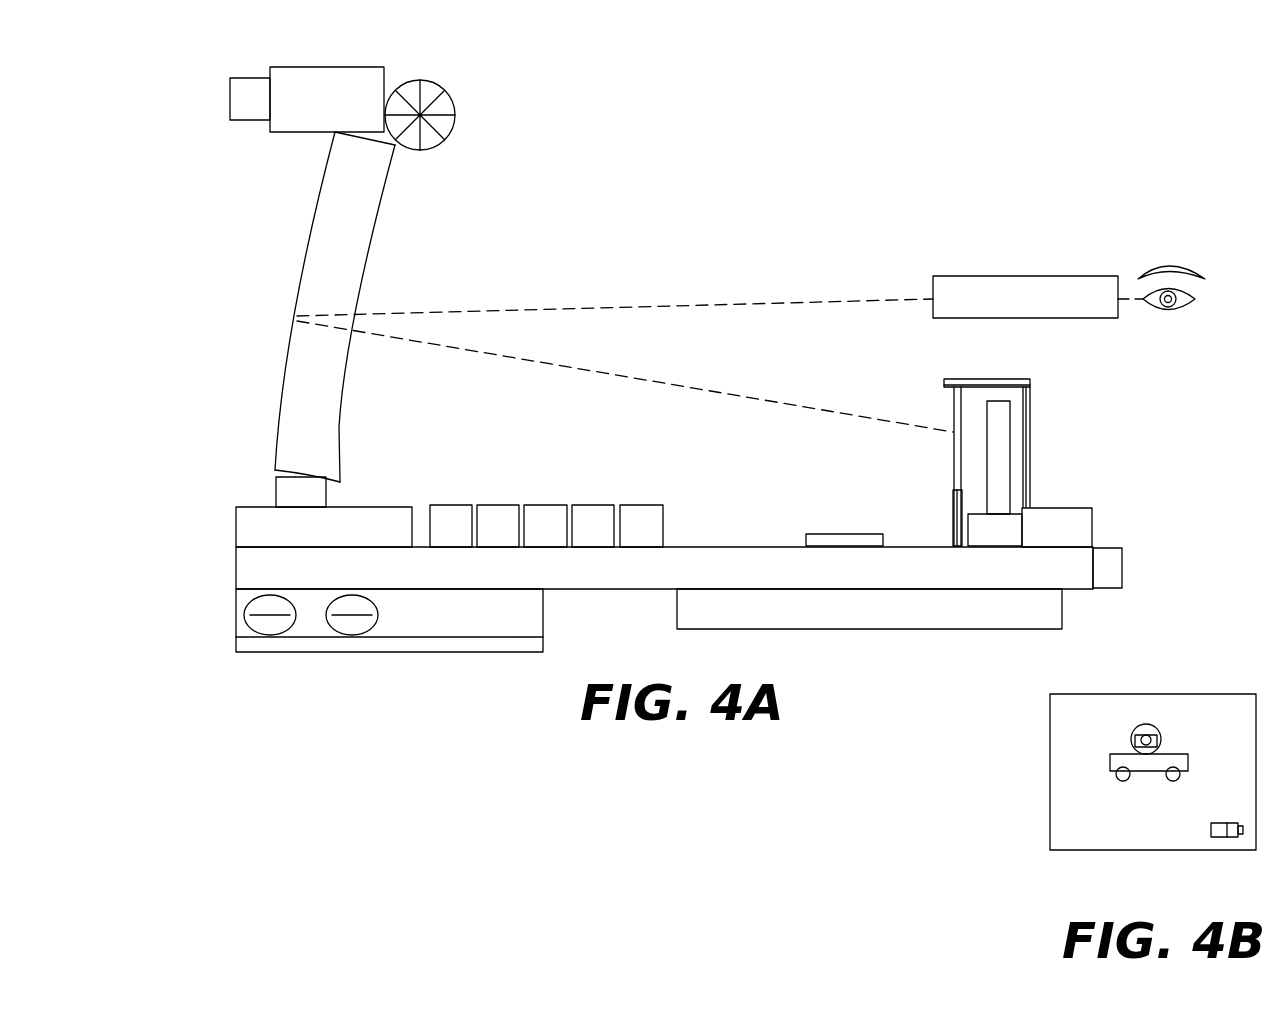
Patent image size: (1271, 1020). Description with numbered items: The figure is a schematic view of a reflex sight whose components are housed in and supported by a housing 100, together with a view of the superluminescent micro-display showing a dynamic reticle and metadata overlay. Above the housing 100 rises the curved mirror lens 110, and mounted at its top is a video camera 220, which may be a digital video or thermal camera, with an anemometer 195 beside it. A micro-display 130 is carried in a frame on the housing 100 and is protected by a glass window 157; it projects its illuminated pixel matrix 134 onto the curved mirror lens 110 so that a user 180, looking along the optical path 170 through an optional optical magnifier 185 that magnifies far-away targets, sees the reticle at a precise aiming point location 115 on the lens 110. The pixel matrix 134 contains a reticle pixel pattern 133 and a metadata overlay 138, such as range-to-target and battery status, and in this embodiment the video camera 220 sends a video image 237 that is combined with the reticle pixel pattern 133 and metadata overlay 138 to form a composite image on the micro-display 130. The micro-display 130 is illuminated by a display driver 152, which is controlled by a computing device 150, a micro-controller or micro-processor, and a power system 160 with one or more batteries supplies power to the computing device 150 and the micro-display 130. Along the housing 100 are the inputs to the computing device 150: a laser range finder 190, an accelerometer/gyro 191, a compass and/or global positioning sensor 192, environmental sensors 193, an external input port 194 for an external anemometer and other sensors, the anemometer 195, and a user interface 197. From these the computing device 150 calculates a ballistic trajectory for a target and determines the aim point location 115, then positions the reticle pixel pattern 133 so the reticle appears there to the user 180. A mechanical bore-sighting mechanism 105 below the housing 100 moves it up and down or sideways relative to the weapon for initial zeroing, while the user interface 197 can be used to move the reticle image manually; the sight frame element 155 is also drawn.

In FIG. 4A, the housing 100 is at (441, 579).
In FIG. 4A, the mechanical bore-sighting mechanism 105 is at (545, 622).
In FIG. 4A, the curved mirror lens 110 is at (310, 380).
In FIG. 4A, the aiming point location 115 is at (292, 316).
In FIG. 4A, the micro-display 130 is at (987, 404).
In FIG. 4B, the reticle pixel pattern 133 is at (1160, 740).
In FIG. 4B, the illuminated pixel matrix 134 is at (1050, 765).
In FIG. 4B, the metadata overlay 138 is at (1218, 838).
In FIG. 4A, the computing device 150 is at (1092, 521).
In FIG. 4A, the display driver 152 is at (1002, 538).
In FIG. 4A, the frame post 155 is at (953, 513).
In FIG. 4A, the glass window 157 is at (953, 461).
In FIG. 4A, the power system 160 is at (892, 631).
In FIG. 4A, the optical path 170 is at (605, 305).
In FIG. 4A, the user 180 is at (1172, 263).
In FIG. 4A, the optical magnifier 185 is at (1020, 276).
In FIG. 4A, the laser range finder 190 is at (329, 541).
In FIG. 4A, the accelerometer/gyro 191 is at (455, 505).
In FIG. 4A, the compass and/or global positioning sensor 192 is at (500, 505).
In FIG. 4A, the environmental sensors 193 is at (548, 505).
In FIG. 4A, the external input port 194 is at (645, 505).
In FIG. 4A, the anemometer 195 is at (453, 125).
In FIG. 4A, the user interface 197 is at (1122, 567).
In FIG. 4A, the video camera 220 is at (305, 64).
In FIG. 4B, the video image 237 is at (1188, 758).